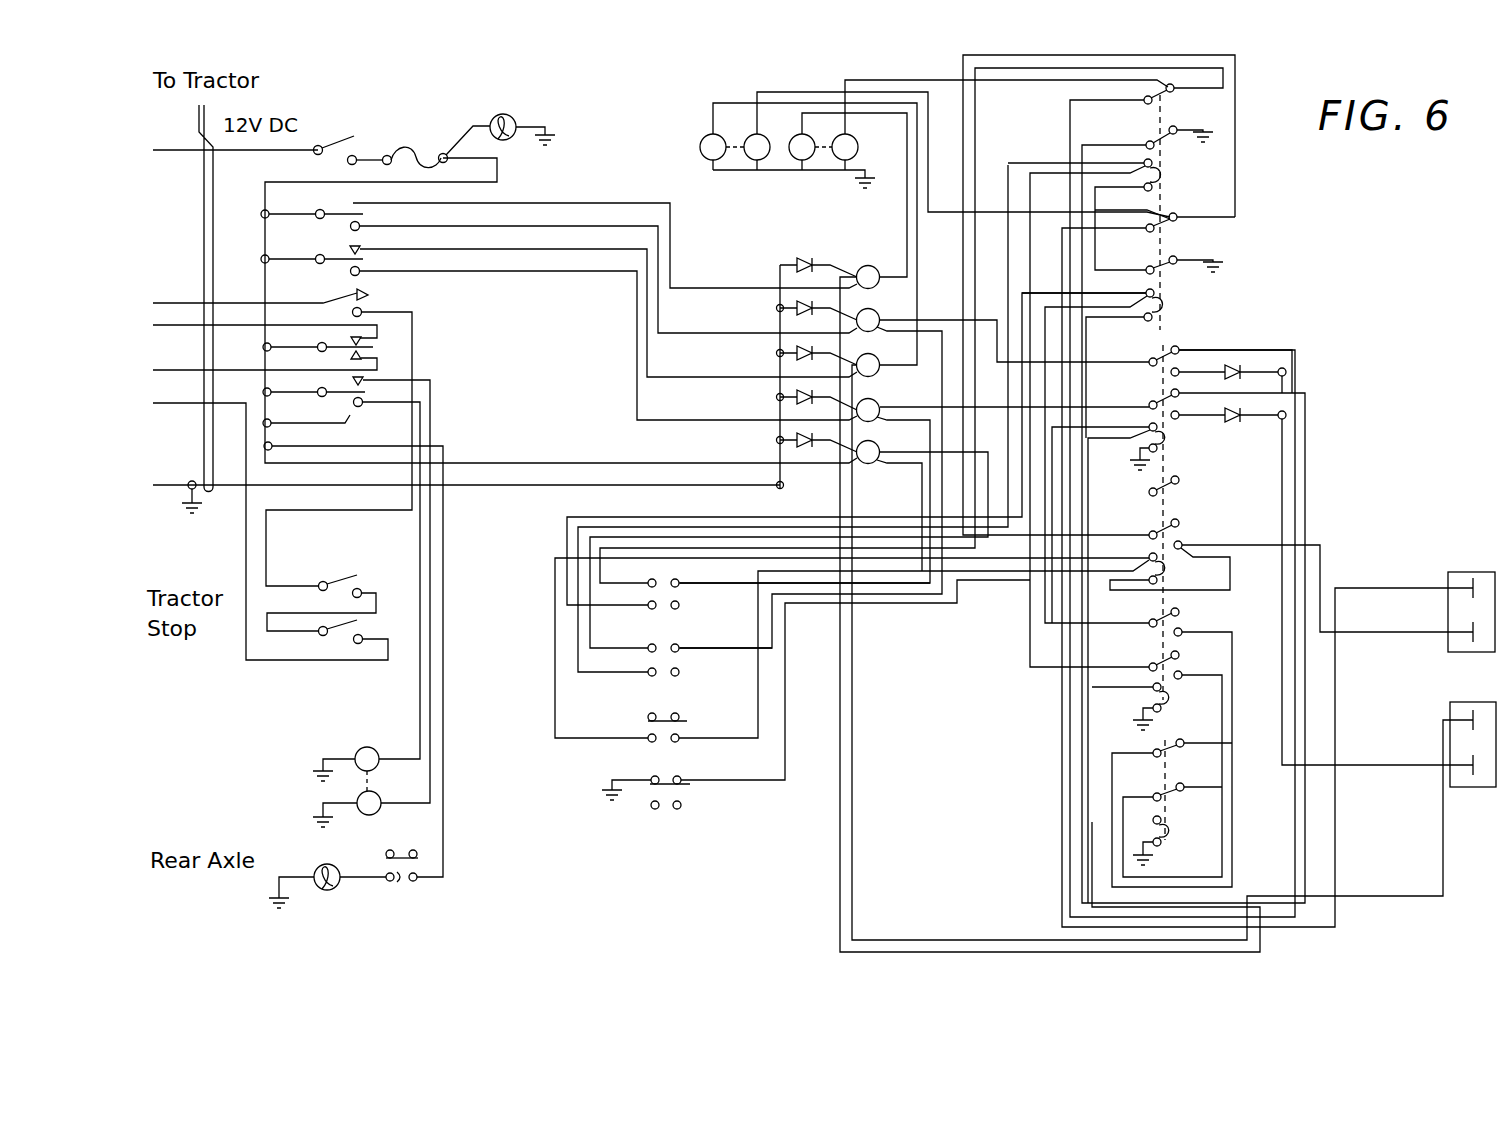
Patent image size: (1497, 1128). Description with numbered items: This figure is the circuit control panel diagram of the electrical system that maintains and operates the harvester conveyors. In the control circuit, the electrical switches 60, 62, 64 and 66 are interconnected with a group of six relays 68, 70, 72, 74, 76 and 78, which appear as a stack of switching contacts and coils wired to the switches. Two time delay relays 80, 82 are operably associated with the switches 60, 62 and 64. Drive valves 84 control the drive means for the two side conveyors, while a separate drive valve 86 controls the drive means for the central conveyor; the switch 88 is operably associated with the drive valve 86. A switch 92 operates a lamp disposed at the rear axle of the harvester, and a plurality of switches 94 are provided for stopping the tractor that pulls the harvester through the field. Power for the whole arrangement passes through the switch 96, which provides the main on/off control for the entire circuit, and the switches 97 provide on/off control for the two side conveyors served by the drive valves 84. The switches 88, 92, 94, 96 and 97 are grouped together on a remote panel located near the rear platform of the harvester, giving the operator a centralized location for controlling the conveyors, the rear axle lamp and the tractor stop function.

The electrical switch 60 is at (680, 655).
The electrical switch 62 is at (680, 590).
The electrical switch 64 is at (688, 728).
The electrical switch 66 is at (686, 793).
The relay 68 is at (1192, 195).
The relay 70 is at (1205, 320).
The relay 72 is at (1185, 448).
The relay 74 is at (1191, 541).
The relay 76 is at (1183, 696).
The relay 78 is at (1205, 840).
The time delay relay 80 is at (1468, 571).
The time delay relay 82 is at (1473, 778).
The drive valves 84 is at (829, 172).
The drive valve 86 is at (346, 779).
The switch 88 is at (392, 352).
The switch 92 is at (400, 884).
The switches 94 is at (382, 294).
The switch 96 is at (357, 147).
The switches 97 is at (300, 233).